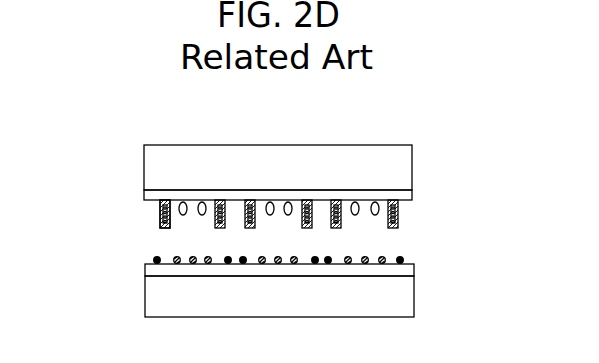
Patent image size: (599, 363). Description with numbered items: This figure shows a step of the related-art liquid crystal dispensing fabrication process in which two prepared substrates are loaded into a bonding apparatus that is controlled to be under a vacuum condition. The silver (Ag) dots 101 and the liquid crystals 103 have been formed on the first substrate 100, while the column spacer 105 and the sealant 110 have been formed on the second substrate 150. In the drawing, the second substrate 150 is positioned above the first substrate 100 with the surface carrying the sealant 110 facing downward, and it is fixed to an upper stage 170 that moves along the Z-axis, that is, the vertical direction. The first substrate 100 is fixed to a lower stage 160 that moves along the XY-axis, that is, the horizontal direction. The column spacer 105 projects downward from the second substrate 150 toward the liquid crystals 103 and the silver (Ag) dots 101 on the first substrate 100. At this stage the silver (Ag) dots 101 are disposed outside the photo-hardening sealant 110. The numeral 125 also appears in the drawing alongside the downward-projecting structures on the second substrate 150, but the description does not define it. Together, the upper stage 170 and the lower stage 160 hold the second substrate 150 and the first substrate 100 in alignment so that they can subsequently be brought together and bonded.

The upper stage 170 is at (408, 165).
The second substrate 150 is at (412, 193).
The column spacer 125 is at (397, 210).
The sealant 110 is at (160, 220).
The column spacer 105 is at (373, 206).
The silver (Ag) dots 101 is at (155, 261).
The liquid crystals 103 is at (176, 263).
The first substrate 100 is at (410, 268).
The lower stage 160 is at (410, 298).